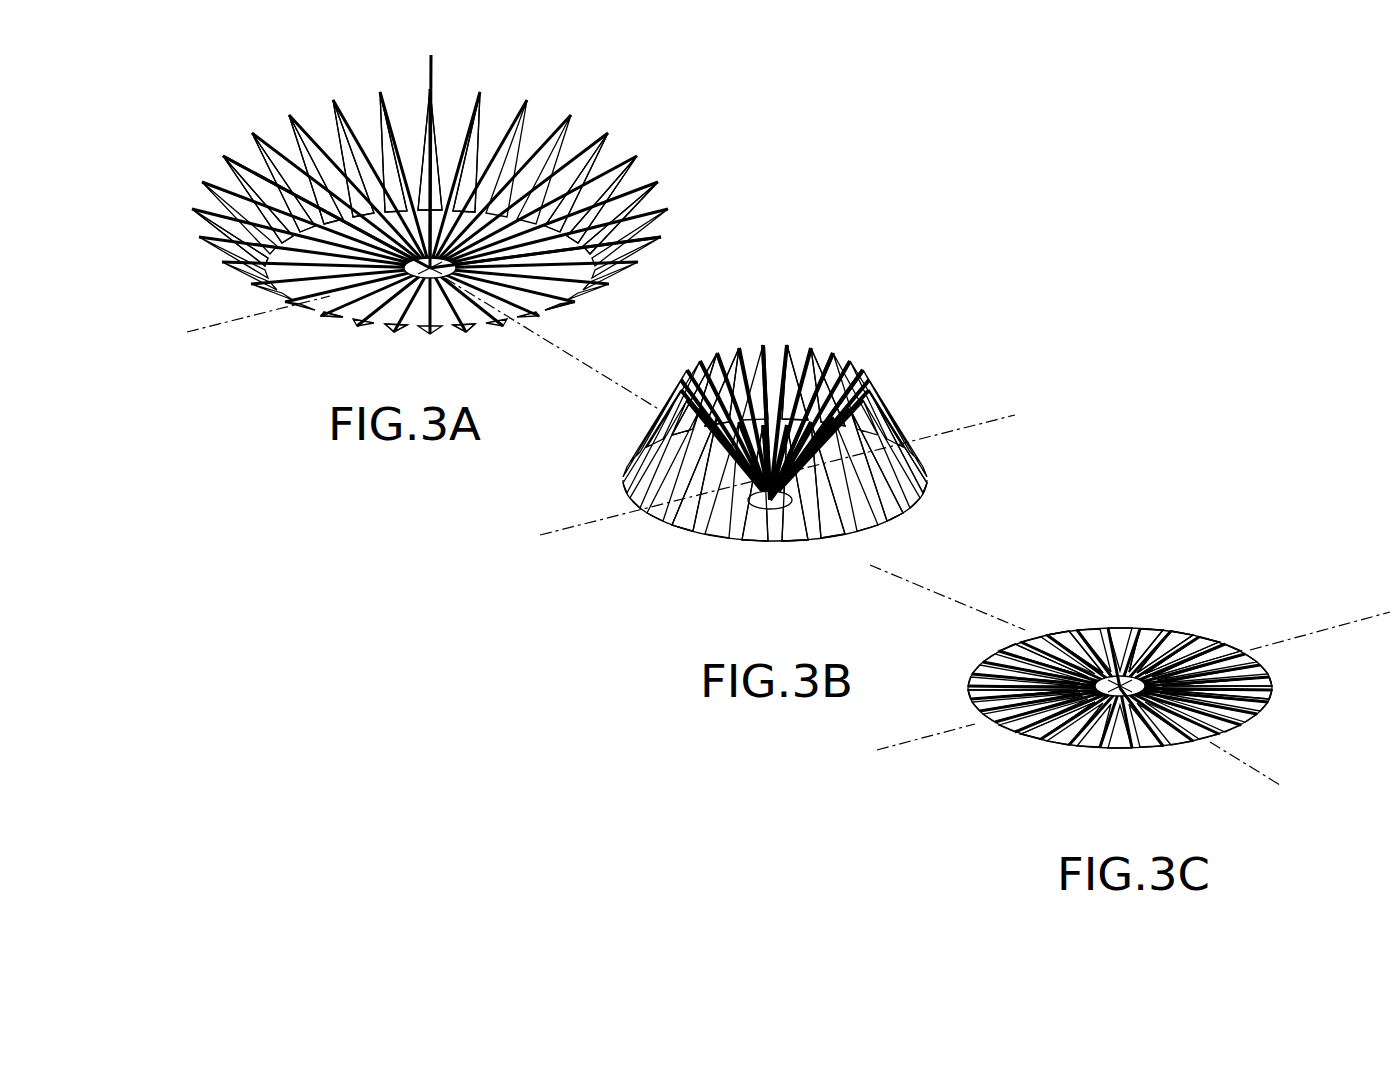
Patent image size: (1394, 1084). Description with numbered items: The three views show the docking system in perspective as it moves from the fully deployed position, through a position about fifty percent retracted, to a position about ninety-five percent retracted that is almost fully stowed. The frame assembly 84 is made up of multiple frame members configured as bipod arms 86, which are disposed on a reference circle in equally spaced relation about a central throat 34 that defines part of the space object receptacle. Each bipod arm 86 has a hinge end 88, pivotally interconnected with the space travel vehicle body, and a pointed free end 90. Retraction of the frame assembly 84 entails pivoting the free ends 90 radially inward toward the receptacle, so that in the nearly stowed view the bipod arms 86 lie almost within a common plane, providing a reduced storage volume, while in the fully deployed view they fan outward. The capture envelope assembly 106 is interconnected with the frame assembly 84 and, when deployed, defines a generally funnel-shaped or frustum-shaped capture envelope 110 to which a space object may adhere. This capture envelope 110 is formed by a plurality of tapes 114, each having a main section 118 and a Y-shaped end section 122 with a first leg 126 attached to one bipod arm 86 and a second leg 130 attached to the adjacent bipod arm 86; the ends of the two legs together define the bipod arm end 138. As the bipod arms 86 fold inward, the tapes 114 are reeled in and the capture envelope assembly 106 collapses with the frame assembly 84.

In FIG. 3A, the throat 34 is at (432, 280).
In FIG. 3B, the throat 34 is at (745, 540).
In FIG. 3C, the throat 34 is at (1115, 700).
In FIG. 3A, the frame assembly 84 is at (485, 132).
In FIG. 3B, the frame assembly 84 is at (600, 495).
In FIG. 3C, the frame assembly 84 is at (1255, 625).
In FIG. 3A, the bipod arm 86 is at (310, 150).
In FIG. 3B, the bipod arm 86 is at (765, 540).
In FIG. 3C, the bipod arm 86 is at (1160, 635).
In FIG. 3A, the hinge end 88 is at (455, 320).
In FIG. 3B, the hinge end 88 is at (695, 532).
In FIG. 3C, the hinge end 88 is at (1080, 630).
In FIG. 3A, the free end 90 is at (675, 230).
In FIG. 3B, the free end 90 is at (745, 380).
In FIG. 3C, the free end 90 is at (1118, 640).
In FIG. 3A, the capture envelope assembly 106 is at (700, 222).
In FIG. 3B, the capture envelope assembly 106 is at (870, 350).
In FIG. 3A, the capture envelope 110 is at (545, 110).
In FIG. 3A, the tape 114 is at (430, 140).
In FIG. 3B, the tape 114 is at (720, 360).
In FIG. 3C, the tape 114 is at (1135, 635).
In FIG. 3A, the main section 118 is at (438, 141).
In FIG. 3A, the end section 122 is at (283, 175).
In FIG. 3A, the first leg 126 is at (325, 150).
In FIG. 3A, the second leg 130 is at (360, 140).
In FIG. 3A, the bipod arm end 138 is at (665, 200).
In FIG. 3B, the bipod arm end 138 is at (680, 370).